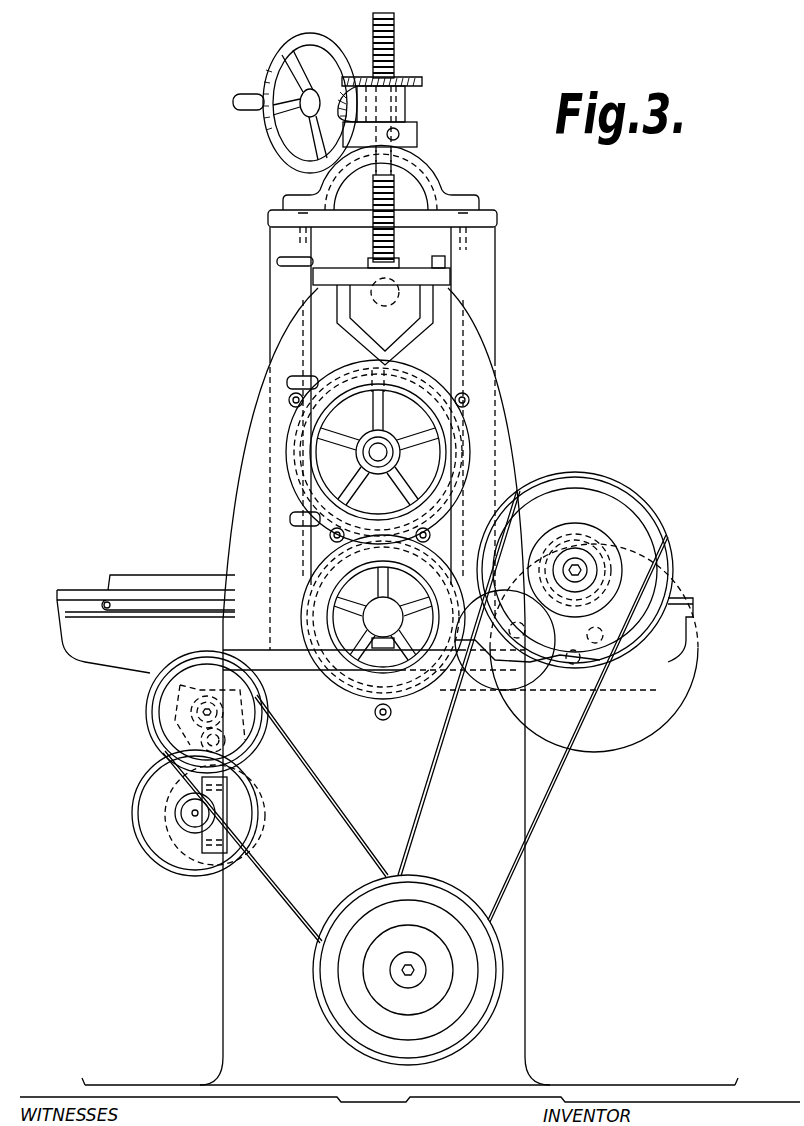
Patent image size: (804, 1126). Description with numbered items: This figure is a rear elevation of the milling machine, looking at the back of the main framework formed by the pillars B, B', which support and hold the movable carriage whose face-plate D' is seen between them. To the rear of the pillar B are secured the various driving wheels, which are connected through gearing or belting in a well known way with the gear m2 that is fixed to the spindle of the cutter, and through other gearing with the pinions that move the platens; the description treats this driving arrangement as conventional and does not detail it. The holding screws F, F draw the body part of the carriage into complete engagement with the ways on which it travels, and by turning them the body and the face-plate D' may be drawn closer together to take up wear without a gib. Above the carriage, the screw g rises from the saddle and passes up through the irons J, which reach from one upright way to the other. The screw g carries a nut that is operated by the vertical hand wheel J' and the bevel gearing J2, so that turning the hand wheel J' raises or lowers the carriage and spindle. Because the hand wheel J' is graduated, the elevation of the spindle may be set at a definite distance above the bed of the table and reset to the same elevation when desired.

The screw g is at (398, 215).
The bevel gearing J2 is at (408, 110).
The hand wheel J' is at (295, 111).
The irons J is at (381, 177).
The pillar B is at (410, 656).
The pillar B' is at (378, 406).
The face-plate D' is at (371, 321).
The holding screws F is at (289, 382).
The gear m2 is at (378, 452).